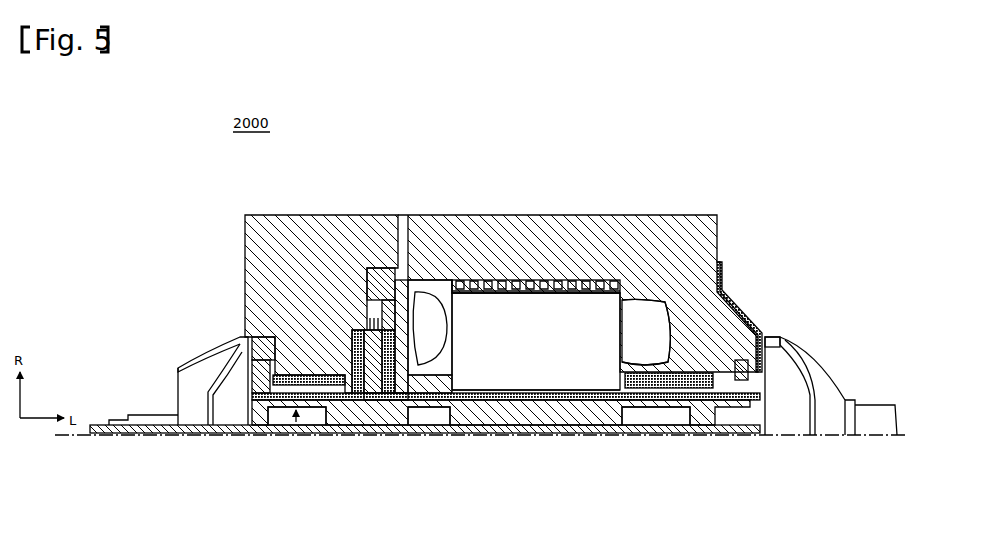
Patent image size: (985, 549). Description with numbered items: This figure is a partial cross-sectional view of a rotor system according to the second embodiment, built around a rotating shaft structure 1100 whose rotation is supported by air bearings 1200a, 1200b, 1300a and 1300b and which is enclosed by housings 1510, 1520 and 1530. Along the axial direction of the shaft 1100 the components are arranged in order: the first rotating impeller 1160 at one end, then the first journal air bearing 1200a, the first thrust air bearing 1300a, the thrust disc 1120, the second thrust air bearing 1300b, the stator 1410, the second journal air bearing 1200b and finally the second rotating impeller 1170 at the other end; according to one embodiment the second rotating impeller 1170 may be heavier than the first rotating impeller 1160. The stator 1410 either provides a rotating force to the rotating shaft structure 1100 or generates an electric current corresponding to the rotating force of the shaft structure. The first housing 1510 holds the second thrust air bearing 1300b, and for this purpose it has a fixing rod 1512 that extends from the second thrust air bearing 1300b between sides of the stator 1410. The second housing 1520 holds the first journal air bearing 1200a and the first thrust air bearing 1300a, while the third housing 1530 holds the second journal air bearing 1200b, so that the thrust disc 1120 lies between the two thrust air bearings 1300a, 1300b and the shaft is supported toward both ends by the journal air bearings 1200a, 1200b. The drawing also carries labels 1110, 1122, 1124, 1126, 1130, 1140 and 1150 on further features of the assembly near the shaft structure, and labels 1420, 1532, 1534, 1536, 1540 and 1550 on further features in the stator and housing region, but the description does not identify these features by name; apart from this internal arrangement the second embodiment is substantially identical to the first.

The rotating shaft structure 1100 is at (185, 442).
The base plate 1110 is at (216, 434).
The thrust disc 1120 is at (272, 416).
The base opening 1122 is at (260, 434).
The base opening 1124 is at (428, 426).
The base passage 1126 is at (332, 414).
The circuit board 1130 is at (560, 401).
The base opening 1140 is at (660, 418).
The adhesive layer 1150 is at (621, 396).
The first rotating impeller 1160 is at (185, 372).
The second rotating impeller 1170 is at (860, 404).
The first journal air bearing 1200a is at (310, 387).
The second journal air bearing 1200b is at (705, 390).
The first thrust air bearing 1300a is at (358, 330).
The second thrust air bearing 1300b is at (390, 330).
The stator 1410 is at (470, 388).
The magnet 1420 is at (505, 302).
The first housing 1510 is at (367, 282).
The fixing rod 1512 is at (392, 402).
The second housing 1520 is at (245, 240).
The third housing 1530 is at (655, 262).
The stator core 1532 is at (535, 280).
The coil 1534 is at (603, 290).
The cavity 1536 is at (695, 320).
The seal member 1540 is at (732, 300).
The sealing ring 1550 is at (370, 333).